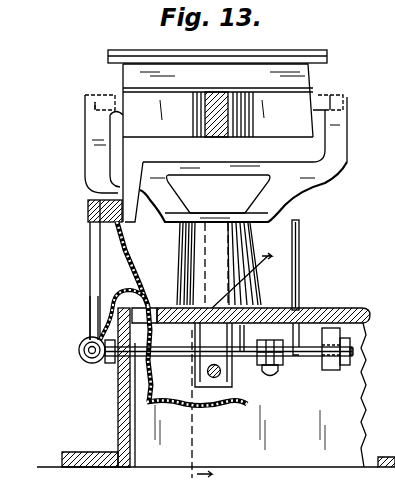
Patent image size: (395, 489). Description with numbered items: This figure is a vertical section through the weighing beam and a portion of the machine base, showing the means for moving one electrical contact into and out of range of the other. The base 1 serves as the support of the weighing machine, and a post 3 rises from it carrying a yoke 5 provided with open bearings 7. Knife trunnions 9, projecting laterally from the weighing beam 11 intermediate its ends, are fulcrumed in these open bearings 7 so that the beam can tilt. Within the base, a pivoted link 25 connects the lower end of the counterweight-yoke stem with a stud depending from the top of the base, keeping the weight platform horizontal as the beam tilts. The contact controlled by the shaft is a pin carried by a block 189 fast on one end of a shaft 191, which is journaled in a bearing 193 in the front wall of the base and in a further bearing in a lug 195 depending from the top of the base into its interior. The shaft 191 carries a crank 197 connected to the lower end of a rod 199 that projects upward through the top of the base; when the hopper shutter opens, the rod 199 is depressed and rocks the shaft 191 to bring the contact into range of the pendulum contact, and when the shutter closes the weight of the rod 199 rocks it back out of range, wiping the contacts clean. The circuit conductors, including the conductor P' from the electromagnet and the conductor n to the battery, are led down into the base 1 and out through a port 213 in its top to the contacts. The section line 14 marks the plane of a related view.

The base 1 is at (333, 310).
The post 3 is at (185, 242).
The yoke 5 is at (322, 178).
The open bearings 7 is at (85, 100).
The knife trunnions 9 is at (102, 111).
The weighing beam 11 is at (205, 113).
The section line 14 is at (179, 364).
The pivoted link 25 is at (218, 406).
The block 189 is at (79, 350).
The shaft 191 is at (195, 360).
The bearing 193 is at (115, 368).
The lug 195 is at (335, 368).
The crank 197 is at (260, 370).
The rod 199 is at (299, 241).
The port 213 is at (157, 303).
The conductor P' is at (94, 270).
The conductor n is at (110, 310).